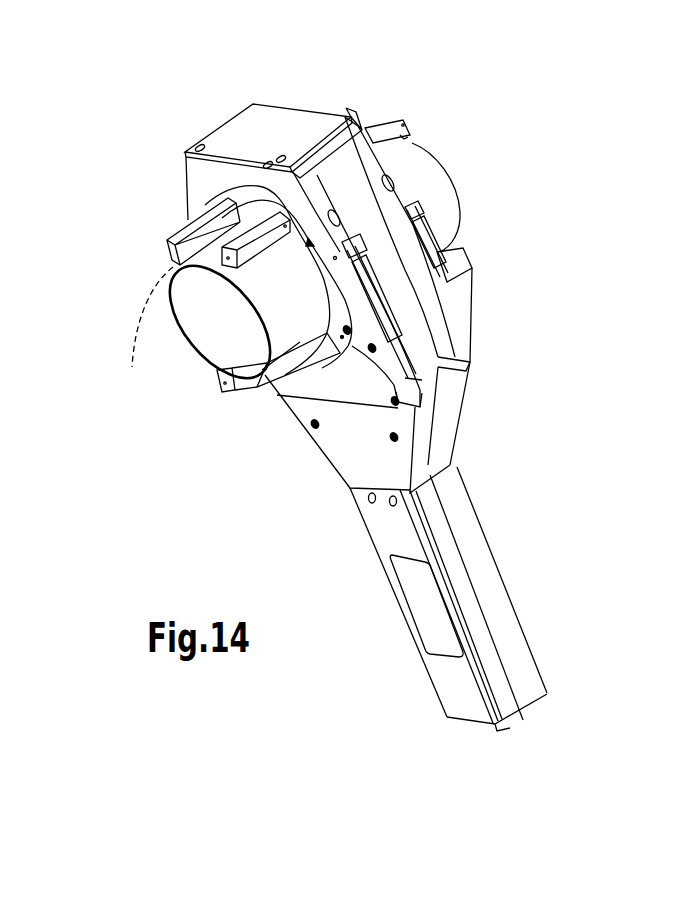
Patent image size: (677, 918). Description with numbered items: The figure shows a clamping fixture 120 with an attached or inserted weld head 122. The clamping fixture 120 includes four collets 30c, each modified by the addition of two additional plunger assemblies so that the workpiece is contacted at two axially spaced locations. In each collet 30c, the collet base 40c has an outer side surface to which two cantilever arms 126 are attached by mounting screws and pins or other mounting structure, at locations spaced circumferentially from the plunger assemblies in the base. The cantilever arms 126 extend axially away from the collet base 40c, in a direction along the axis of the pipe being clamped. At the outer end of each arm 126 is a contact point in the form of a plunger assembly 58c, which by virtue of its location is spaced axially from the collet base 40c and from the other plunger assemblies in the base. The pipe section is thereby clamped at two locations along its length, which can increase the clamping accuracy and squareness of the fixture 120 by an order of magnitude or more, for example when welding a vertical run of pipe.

The collet 30c is at (243, 190).
The collet base 40c is at (257, 202).
The plunger assembly 58c is at (262, 382).
The clamping fixture 120 is at (221, 460).
The weld head 122 is at (462, 433).
The cantilever arm 126 is at (183, 240).